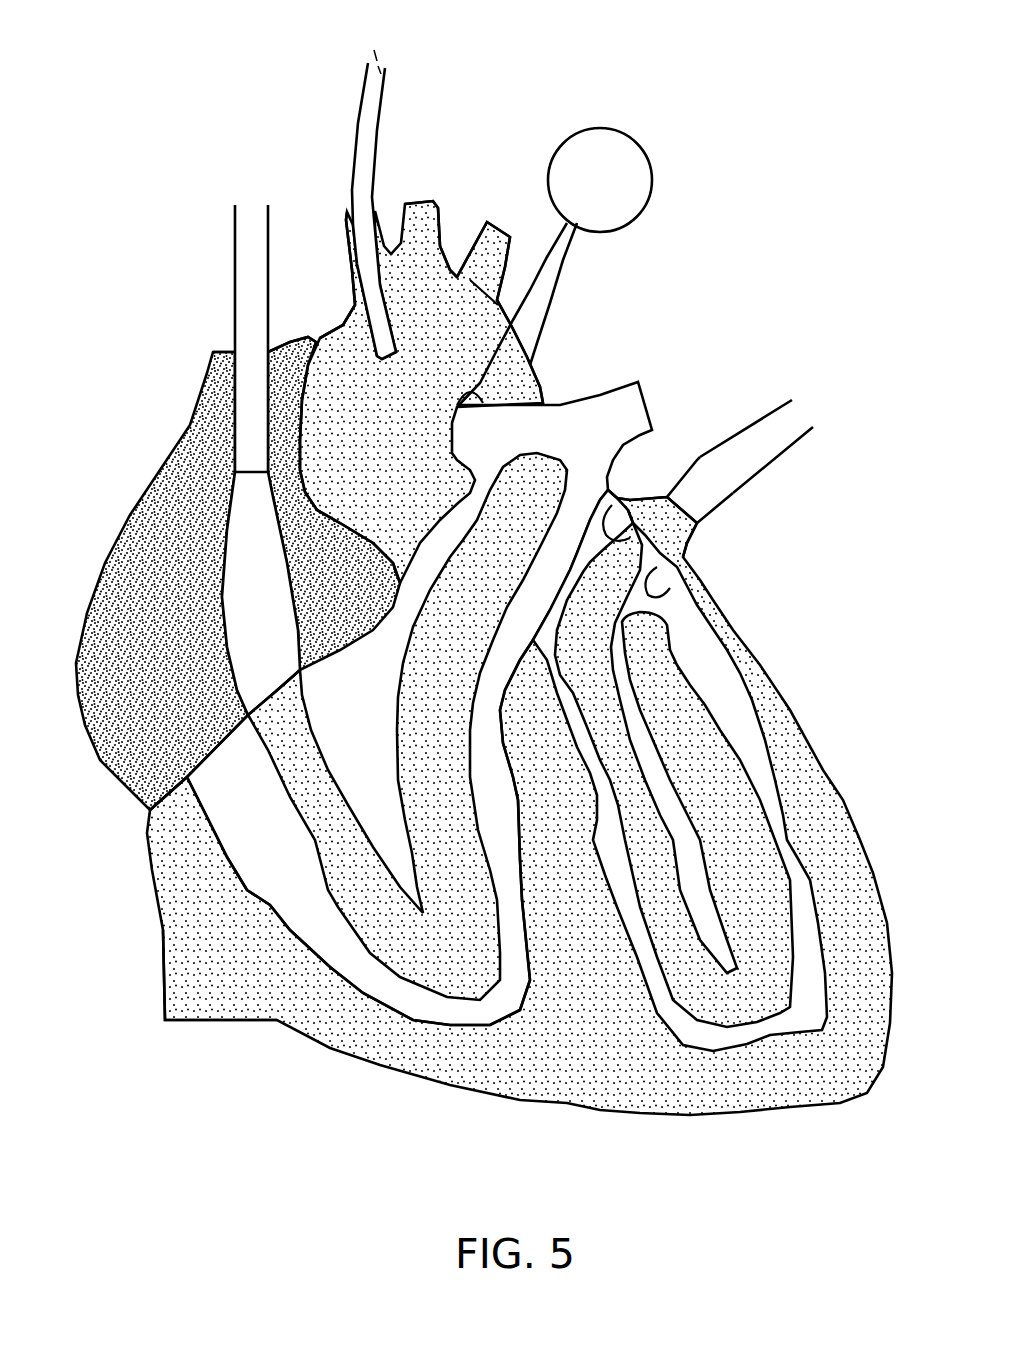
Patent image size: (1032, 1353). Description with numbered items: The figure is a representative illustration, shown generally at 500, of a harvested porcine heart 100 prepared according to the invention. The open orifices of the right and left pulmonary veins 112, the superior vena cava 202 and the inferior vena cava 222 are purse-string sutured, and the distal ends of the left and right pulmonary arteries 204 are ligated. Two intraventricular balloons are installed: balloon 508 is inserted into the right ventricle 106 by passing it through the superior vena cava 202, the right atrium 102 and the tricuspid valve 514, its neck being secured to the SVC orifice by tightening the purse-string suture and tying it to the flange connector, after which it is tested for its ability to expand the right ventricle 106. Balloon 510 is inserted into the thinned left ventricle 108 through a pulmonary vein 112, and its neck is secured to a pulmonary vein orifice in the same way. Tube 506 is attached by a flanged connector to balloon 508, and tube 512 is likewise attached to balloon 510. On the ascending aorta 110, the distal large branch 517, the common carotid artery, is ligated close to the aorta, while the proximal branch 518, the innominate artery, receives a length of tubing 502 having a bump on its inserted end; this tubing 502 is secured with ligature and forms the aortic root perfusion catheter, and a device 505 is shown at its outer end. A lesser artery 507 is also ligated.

The heart 100 is at (655, 1118).
The right atrium 102 is at (88, 600).
The right ventricle 106 is at (387, 990).
The left ventricle 108 is at (798, 854).
The ascending aorta 110 is at (426, 186).
The pulmonary veins 112 is at (733, 493).
The superior vena cava 202 is at (213, 352).
The pulmonary arteries 204 is at (645, 383).
The inferior vena cava 222 is at (169, 1024).
The prepared porcine heart 500 is at (178, 229).
The tubing 502 is at (377, 186).
The implantable device 505 is at (653, 180).
The tube 506 is at (243, 264).
The lesser artery 507 is at (505, 222).
The intraventricular balloon 508 is at (312, 822).
The intraventricular balloon 510 is at (705, 730).
The tube 512 is at (795, 421).
The tricuspid valve 514 is at (250, 713).
The distal large branch of ascending aorta 517 is at (440, 200).
The proximal branch of ascending aorta 518 is at (344, 216).